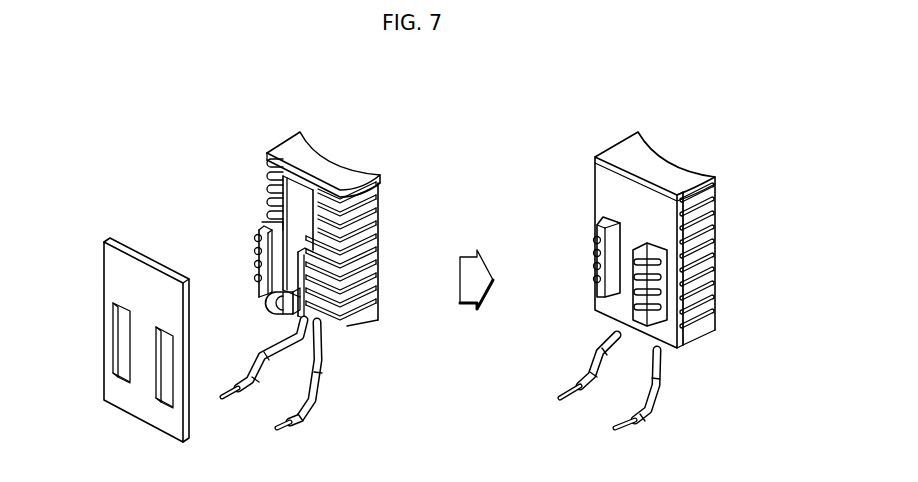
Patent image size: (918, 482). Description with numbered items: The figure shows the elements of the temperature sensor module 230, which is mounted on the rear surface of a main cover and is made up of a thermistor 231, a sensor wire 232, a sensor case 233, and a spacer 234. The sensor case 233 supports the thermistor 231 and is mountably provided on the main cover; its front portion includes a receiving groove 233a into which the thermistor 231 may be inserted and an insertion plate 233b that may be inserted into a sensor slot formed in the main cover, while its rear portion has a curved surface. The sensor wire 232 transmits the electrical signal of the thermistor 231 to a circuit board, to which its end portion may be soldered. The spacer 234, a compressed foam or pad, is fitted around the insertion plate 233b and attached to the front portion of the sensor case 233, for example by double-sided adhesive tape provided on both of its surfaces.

The temperature sensor module 230 is at (607, 118).
The thermistor 231 is at (293, 195).
The sensor wire 232 is at (326, 381).
The sensor case 233 is at (380, 235).
The receiving groove 233a is at (268, 301).
The insertion plate 233b is at (265, 247).
The spacer 234 is at (133, 283).